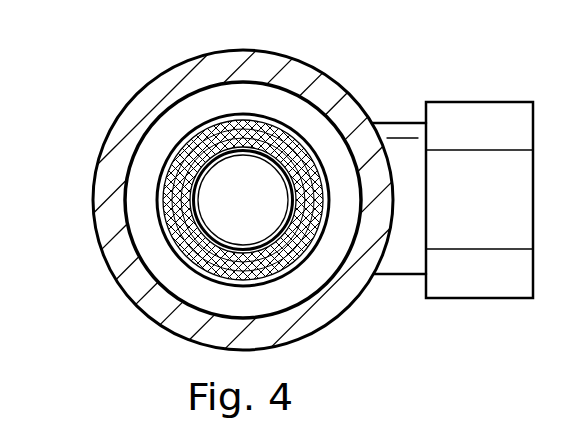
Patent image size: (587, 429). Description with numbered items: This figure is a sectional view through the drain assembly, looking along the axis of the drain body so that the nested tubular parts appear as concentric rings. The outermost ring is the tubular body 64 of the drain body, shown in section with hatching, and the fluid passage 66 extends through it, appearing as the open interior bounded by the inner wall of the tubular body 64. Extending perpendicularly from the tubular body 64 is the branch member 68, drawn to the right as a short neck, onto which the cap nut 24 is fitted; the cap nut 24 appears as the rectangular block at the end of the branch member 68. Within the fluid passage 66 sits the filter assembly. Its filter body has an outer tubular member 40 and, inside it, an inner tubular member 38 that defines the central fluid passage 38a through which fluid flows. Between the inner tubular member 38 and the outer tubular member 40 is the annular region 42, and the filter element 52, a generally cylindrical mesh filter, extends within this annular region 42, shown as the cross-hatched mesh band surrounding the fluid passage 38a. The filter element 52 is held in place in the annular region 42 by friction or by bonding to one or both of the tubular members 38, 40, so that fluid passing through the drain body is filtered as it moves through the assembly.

The cap nut 24 is at (481, 290).
The inner tubular member 38 is at (163, 232).
The fluid passage 38a is at (265, 216).
The outer tubular member 40 is at (184, 272).
The annular region 42 is at (173, 145).
The filter element 52 is at (197, 140).
The tubular body 64 is at (117, 273).
The fluid passage 66 is at (320, 268).
The branch member 68 is at (397, 268).